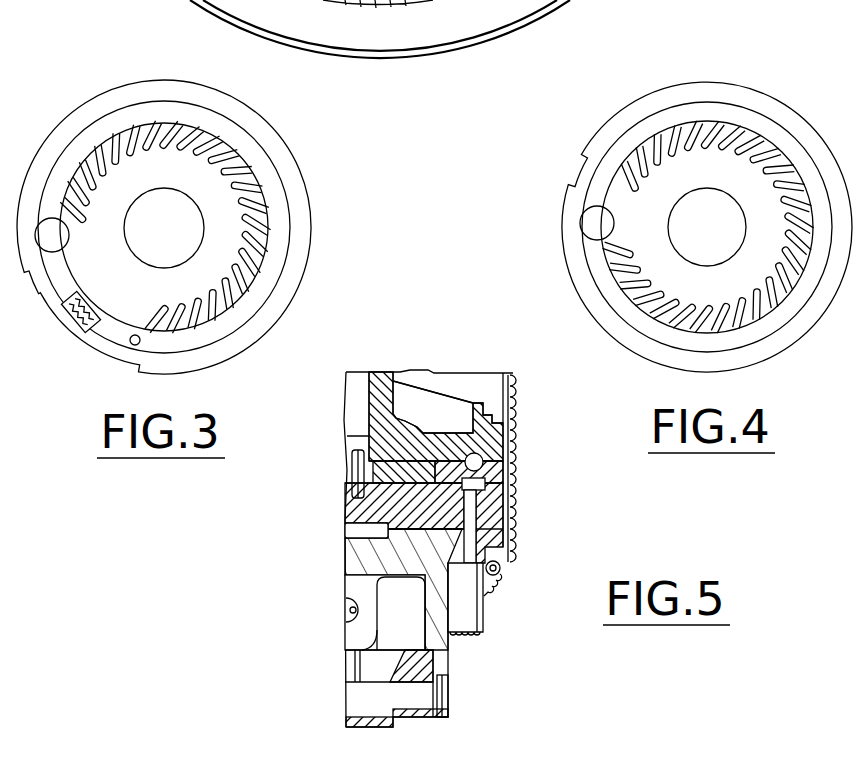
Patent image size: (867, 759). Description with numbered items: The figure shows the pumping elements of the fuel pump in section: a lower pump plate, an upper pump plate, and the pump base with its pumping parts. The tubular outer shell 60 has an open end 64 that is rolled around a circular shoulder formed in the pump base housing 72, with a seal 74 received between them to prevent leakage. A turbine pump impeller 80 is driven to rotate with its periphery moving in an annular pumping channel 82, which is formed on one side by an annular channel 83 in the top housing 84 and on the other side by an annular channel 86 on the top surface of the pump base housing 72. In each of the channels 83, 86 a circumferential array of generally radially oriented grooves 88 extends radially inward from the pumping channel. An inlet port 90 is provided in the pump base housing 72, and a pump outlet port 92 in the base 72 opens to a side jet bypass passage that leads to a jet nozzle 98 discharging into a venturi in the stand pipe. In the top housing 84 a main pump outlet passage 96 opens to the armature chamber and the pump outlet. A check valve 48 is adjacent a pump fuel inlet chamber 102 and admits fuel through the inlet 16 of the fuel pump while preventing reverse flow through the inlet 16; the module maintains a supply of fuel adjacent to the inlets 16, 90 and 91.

In FIG. 5, the inlet 16 is at (452, 718).
In FIG. 5, the check valve 48 is at (373, 708).
In FIG. 5, the tubular outer shell 60 is at (503, 465).
In FIG. 5, the open end 64 is at (500, 580).
In FIG. 3, the pump base housing 72 is at (302, 278).
In FIG. 5, the pump base housing 72 is at (453, 537).
In FIG. 5, the seal 74 is at (487, 568).
In FIG. 3, the turbine pump impeller 80 is at (222, 190).
In FIG. 4, the turbine pump impeller 80 is at (647, 193).
In FIG. 5, the turbine pump impeller 80 is at (457, 470).
In FIG. 4, the annular pumping channel 82 is at (785, 143).
In FIG. 4, the annular channel 83 is at (708, 108).
In FIG. 4, the top housing 84 is at (757, 363).
In FIG. 5, the top housing 84 is at (493, 437).
In FIG. 3, the annular channel 86 is at (213, 327).
In FIG. 3, the grooves 88 is at (221, 156).
In FIG. 4, the grooves 88 is at (757, 158).
In FIG. 3, the inlet port 90 is at (74, 321).
In FIG. 5, the inlet port 90 is at (473, 508).
In FIG. 5, the inlet 91 is at (463, 610).
In FIG. 3, the pump outlet port 92 is at (58, 247).
In FIG. 4, the main pump outlet passage 96 is at (588, 224).
In FIG. 5, the jet nozzle 98 is at (350, 610).
In FIG. 5, the pump fuel inlet chamber 102 is at (417, 695).